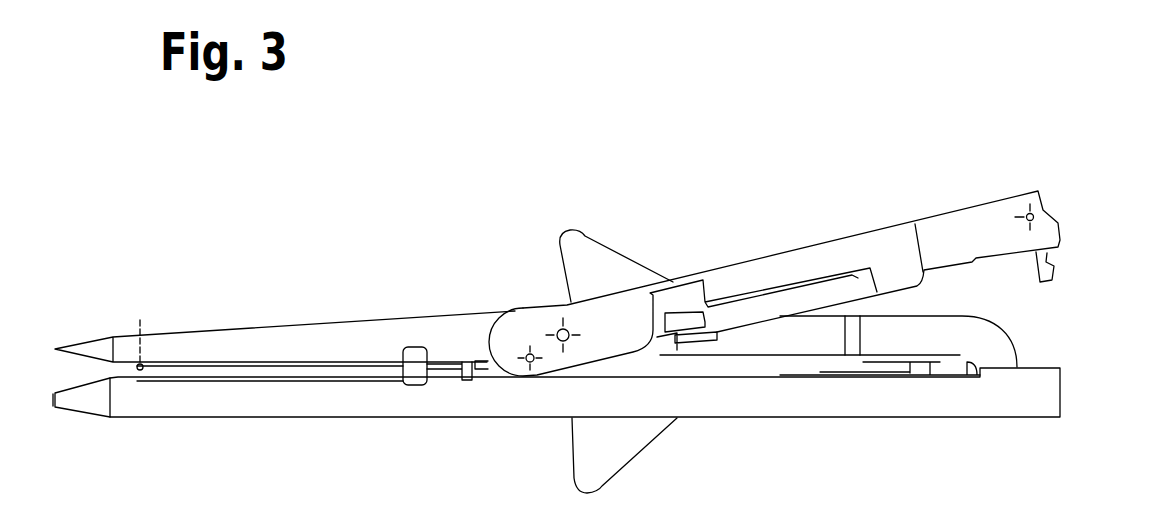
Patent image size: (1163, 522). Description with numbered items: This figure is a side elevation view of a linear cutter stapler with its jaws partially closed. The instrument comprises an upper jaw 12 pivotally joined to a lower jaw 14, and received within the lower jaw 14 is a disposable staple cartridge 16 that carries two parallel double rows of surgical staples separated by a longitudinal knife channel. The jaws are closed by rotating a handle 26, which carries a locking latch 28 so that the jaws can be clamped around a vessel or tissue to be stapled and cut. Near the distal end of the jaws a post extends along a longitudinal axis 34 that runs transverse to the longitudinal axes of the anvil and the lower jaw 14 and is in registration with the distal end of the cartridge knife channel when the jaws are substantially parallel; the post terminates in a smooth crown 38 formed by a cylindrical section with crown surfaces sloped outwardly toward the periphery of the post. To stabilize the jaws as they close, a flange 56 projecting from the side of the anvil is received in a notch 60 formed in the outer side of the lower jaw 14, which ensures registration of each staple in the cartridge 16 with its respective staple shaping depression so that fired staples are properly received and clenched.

The upper jaw 12 is at (223, 340).
The lower jaw 14 is at (240, 405).
The disposable staple cartridge 16 is at (90, 387).
The handle 26 is at (792, 273).
The locking latch 28 is at (1052, 270).
The longitudinal axis of the post 34 is at (140, 320).
The smooth crown 38 is at (143, 365).
The flange 56 is at (418, 358).
The notch 60 is at (423, 390).